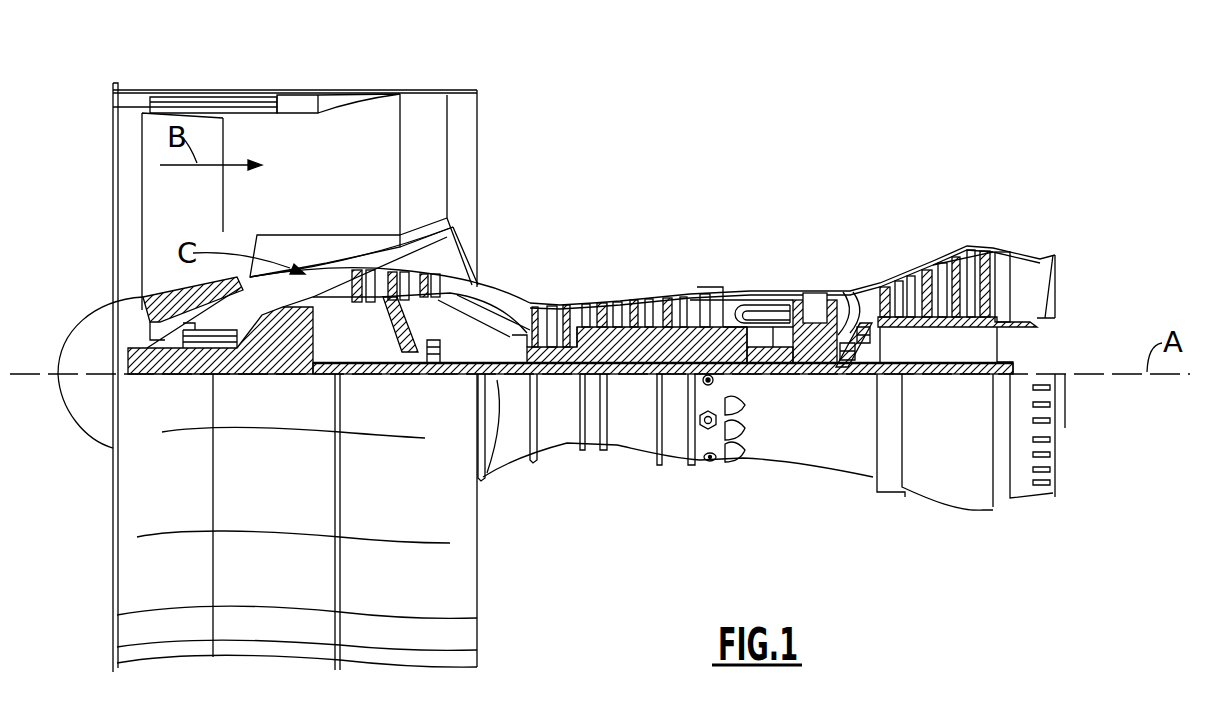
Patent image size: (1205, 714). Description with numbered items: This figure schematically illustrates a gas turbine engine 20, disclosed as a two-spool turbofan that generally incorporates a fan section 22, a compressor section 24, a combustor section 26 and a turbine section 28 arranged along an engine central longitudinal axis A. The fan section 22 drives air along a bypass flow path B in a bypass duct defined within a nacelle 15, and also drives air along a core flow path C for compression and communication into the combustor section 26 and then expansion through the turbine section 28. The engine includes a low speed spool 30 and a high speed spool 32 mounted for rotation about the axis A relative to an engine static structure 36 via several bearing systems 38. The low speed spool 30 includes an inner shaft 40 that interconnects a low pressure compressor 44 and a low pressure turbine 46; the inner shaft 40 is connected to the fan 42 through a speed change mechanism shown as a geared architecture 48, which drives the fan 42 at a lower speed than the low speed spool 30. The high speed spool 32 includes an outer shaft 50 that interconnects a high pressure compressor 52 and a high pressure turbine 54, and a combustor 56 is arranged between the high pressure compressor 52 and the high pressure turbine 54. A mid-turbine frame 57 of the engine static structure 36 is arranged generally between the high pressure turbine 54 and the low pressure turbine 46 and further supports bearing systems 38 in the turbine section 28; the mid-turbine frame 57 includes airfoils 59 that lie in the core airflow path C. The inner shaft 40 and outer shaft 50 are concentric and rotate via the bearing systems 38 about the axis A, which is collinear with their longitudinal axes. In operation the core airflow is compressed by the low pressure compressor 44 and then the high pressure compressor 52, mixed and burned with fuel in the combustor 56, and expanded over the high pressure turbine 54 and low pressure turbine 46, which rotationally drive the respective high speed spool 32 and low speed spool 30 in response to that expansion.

The nacelle 15 is at (295, 92).
The gas turbine engine 20 is at (758, 137).
The fan section 22 is at (225, 80).
The compressor section 24 is at (530, 270).
The combustor section 26 is at (750, 258).
The turbine section 28 is at (903, 220).
The low speed spool 30 is at (632, 392).
The high speed spool 32 is at (670, 337).
The engine static structure 36 is at (673, 476).
The bearing systems 38 is at (435, 367).
The inner shaft 40 is at (498, 458).
The fan 42 is at (200, 221).
The low pressure compressor 44 is at (447, 237).
The low pressure turbine 46 is at (942, 255).
The geared architecture 48 is at (300, 357).
The outer shaft 50 is at (765, 368).
The high pressure compressor 52 is at (610, 338).
The high pressure turbine 54 is at (813, 292).
The combustor 56 is at (750, 313).
The mid-turbine frame 57 is at (862, 270).
The airfoils 59 is at (888, 338).